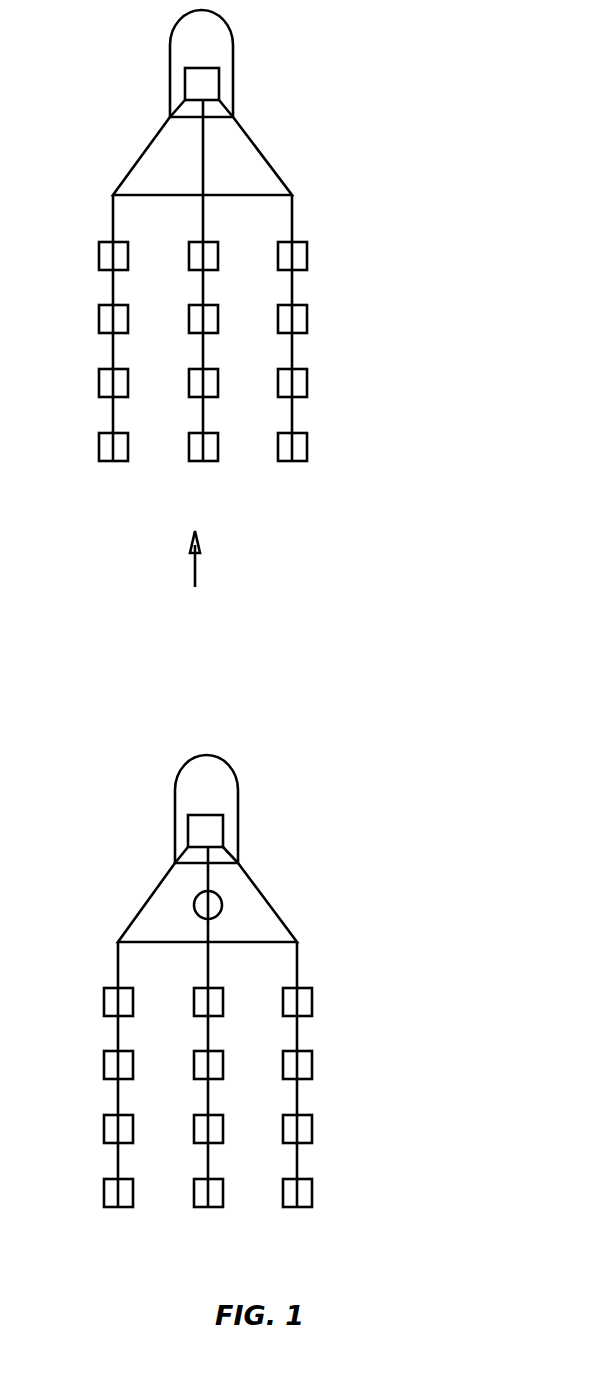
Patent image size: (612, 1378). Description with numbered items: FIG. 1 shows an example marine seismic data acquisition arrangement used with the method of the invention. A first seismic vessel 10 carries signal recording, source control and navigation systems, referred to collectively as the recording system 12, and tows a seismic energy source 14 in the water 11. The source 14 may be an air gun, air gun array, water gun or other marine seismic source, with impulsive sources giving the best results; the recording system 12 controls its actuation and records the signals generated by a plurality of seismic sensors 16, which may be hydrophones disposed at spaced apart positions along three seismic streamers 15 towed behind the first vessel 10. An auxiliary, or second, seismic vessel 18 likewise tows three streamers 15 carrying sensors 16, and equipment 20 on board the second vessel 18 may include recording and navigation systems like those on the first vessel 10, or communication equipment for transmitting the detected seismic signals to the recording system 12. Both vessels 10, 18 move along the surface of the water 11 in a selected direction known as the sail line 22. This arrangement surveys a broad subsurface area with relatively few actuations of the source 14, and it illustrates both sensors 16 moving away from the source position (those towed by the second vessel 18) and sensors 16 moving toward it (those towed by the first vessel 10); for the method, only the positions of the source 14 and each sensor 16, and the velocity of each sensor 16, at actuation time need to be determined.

The first seismic vessel 10 is at (238, 793).
The water 11 is at (477, 634).
The recording system 12 is at (188, 832).
The seismic energy source 14 is at (222, 903).
The seismic streamer 15 is at (113, 215).
The seismic sensor 16 is at (120, 270).
The second seismic vessel 18 is at (233, 30).
The equipment 20 is at (219, 85).
The sail line 22 is at (196, 573).